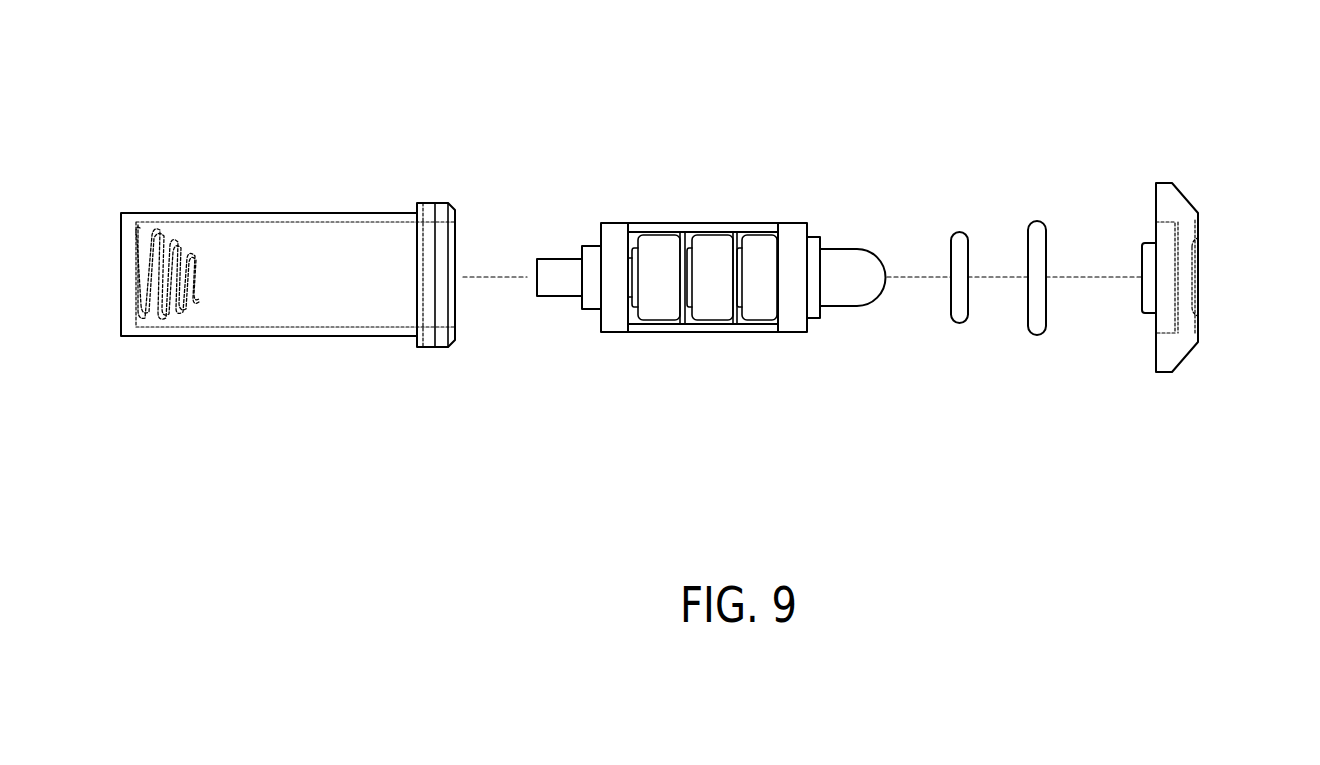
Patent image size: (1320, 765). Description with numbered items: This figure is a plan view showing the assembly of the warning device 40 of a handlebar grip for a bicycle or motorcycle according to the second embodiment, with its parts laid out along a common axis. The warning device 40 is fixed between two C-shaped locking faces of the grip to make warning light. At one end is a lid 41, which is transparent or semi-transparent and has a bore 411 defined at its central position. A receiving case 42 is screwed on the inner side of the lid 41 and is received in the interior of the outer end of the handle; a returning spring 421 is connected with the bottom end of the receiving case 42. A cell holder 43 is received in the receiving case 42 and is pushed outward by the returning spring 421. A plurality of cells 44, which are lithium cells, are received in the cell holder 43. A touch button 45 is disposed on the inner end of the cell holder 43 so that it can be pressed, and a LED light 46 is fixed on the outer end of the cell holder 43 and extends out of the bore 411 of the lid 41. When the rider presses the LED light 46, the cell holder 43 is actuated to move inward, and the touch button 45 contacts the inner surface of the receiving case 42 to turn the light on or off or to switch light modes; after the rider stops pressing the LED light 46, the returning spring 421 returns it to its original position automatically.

The warning device 40 is at (793, 137).
The lid 41 is at (1163, 373).
The bore 411 is at (1182, 278).
The receiving case 42 is at (348, 213).
The returning spring 421 is at (178, 245).
The cell holder 43 is at (730, 333).
The cells 44 is at (714, 245).
The touch button 45 is at (570, 297).
The LED light 46 is at (845, 305).